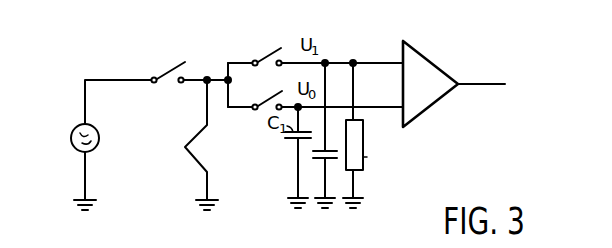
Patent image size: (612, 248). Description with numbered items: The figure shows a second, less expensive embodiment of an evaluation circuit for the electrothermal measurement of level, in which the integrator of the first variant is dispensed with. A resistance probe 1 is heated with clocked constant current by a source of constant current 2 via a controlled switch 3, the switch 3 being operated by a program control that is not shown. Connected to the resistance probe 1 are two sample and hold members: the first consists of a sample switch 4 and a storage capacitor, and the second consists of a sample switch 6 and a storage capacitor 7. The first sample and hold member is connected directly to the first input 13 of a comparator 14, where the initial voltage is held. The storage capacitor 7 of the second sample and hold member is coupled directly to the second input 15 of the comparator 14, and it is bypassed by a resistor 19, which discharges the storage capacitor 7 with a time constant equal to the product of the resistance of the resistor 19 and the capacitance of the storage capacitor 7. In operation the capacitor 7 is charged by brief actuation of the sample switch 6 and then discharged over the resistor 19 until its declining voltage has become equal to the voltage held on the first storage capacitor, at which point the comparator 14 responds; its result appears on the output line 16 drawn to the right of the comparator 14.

The resistance probe 1 is at (192, 142).
The source of constant current 2 is at (71, 143).
The controlled switch 3 is at (173, 62).
The sample switch 4 is at (270, 91).
The sample switch 6 is at (270, 43).
The storage capacitor 7 is at (328, 159).
The first input 13 is at (385, 109).
The comparator 14 is at (428, 63).
The second input 15 is at (373, 59).
The output line 16 is at (485, 82).
The resistor 19 is at (357, 168).